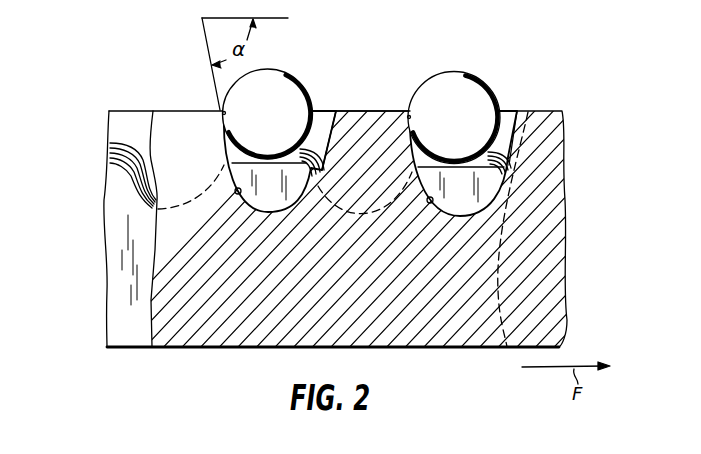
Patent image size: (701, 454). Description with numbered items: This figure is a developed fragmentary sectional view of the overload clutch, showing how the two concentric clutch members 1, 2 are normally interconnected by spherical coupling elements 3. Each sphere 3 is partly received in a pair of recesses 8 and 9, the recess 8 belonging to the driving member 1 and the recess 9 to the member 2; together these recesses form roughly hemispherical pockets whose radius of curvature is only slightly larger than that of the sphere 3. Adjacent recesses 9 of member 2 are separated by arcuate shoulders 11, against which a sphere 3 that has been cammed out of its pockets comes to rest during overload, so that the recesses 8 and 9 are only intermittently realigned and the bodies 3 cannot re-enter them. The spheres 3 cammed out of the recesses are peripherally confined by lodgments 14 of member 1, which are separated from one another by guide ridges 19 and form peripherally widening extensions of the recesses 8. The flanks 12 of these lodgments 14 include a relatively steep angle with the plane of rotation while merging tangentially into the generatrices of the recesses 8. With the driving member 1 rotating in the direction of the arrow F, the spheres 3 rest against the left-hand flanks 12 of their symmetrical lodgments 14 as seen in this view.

The clutch member 1 is at (393, 229).
The clutch member 2 is at (120, 293).
The spherical coupling element 3 is at (290, 78).
The recess 8 is at (236, 194).
The recess 9 is at (139, 193).
The arcuate shoulder 11 is at (322, 170).
The flank 12 is at (223, 118).
The lodgment 14 is at (332, 126).
The guide ridge 19 is at (372, 118).